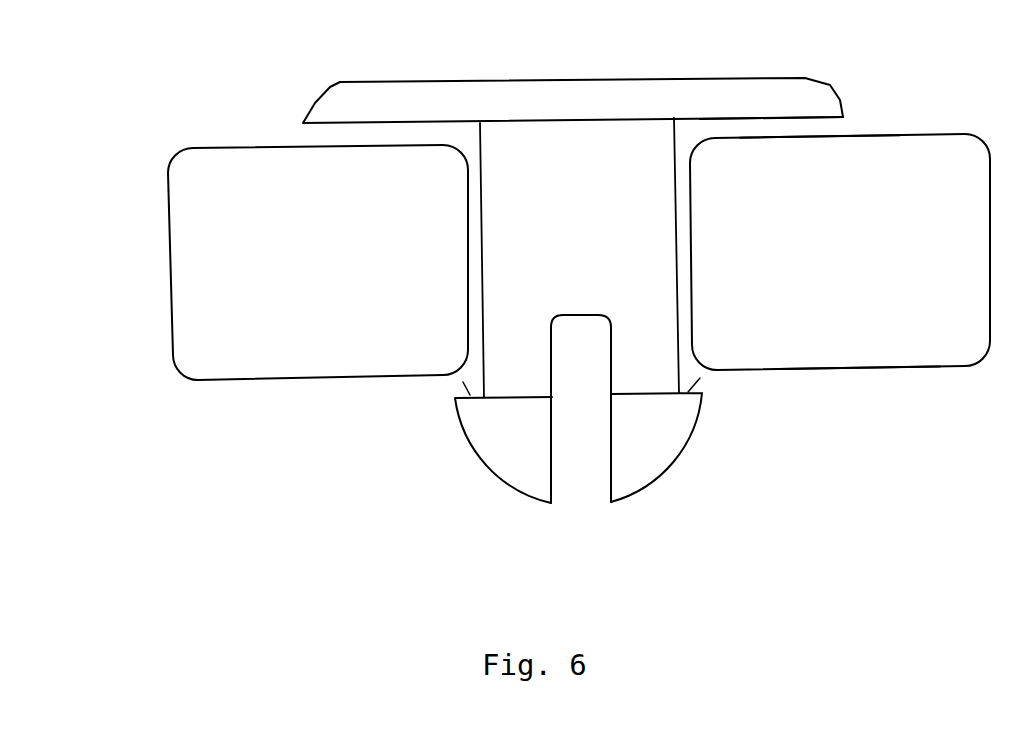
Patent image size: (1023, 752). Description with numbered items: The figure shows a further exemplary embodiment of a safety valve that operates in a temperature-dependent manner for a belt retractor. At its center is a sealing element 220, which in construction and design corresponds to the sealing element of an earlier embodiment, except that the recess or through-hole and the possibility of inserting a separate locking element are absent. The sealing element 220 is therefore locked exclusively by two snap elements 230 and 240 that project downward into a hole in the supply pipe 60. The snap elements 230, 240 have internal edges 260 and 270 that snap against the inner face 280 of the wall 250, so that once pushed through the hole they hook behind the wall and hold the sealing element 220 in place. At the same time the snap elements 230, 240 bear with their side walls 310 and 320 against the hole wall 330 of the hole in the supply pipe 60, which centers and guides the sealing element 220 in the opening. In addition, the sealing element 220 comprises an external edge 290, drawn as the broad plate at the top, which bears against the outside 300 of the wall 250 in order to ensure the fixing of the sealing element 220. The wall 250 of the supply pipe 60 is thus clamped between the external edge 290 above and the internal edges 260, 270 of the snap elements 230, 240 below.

The supply pipe 60 is at (242, 182).
The sealing element 220 is at (652, 92).
The snap element 230 is at (528, 475).
The snap element 240 is at (655, 460).
The wall 250 is at (927, 173).
The internal edge 260 is at (463, 382).
The internal edge 270 is at (700, 378).
The inner face 280 is at (864, 368).
The external edge 290 is at (753, 115).
The outside of the wall 300 is at (885, 135).
The side wall 310 is at (482, 280).
The side wall 320 is at (676, 280).
The hole wall 330 is at (467, 225).